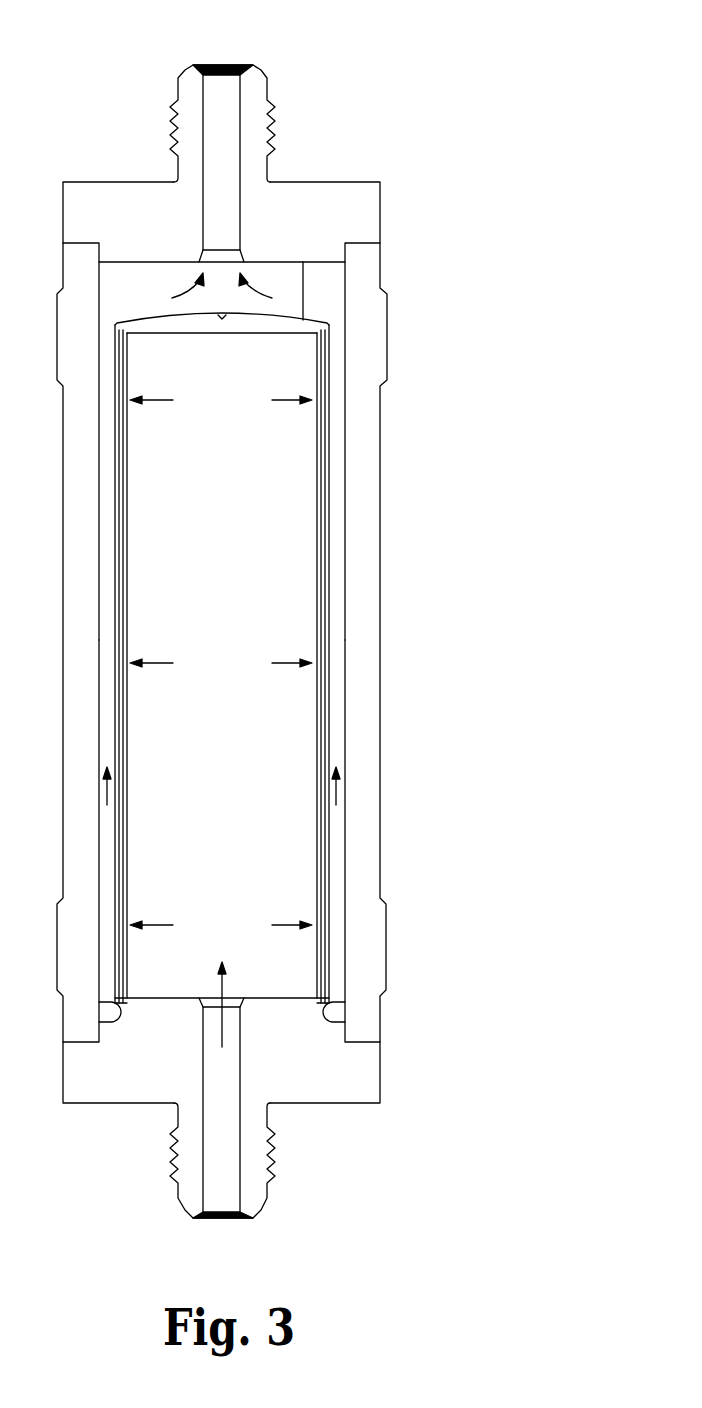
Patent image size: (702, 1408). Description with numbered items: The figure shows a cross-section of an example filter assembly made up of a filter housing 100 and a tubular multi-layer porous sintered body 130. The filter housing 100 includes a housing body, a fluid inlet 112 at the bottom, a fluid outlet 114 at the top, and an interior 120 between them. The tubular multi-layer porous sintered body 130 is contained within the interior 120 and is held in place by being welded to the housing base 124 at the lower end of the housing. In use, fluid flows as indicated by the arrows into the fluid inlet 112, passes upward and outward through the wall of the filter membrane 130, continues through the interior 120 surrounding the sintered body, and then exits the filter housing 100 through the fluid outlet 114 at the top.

The filter housing 100 is at (463, 83).
The fluid inlet 112 is at (222, 1220).
The fluid outlet 114 is at (222, 65).
The interior 120 is at (323, 295).
The housing base 124 is at (345, 1087).
The tubular multi-layer porous sintered body 130 is at (330, 472).